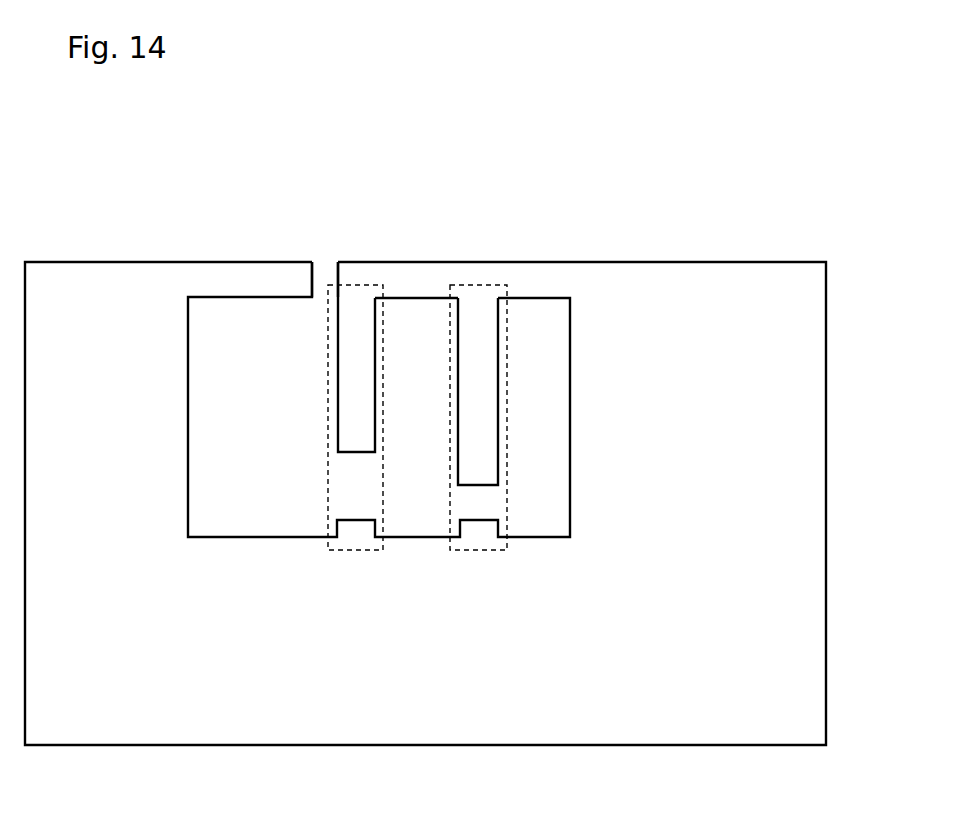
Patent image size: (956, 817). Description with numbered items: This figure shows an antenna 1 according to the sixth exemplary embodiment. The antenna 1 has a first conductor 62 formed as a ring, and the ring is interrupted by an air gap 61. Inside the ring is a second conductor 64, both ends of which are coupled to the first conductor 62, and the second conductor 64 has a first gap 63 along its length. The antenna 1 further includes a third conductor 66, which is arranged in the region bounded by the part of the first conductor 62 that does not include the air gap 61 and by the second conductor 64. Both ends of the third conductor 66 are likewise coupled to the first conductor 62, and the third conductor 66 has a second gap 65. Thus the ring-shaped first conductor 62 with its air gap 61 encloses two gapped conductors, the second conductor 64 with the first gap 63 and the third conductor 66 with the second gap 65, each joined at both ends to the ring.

The antenna 1 is at (697, 262).
The air gap 61 is at (324, 262).
The first conductor 62 is at (783, 534).
The first gap 63 is at (357, 477).
The second conductor 64 is at (328, 406).
The second gap 65 is at (480, 503).
The third conductor 66 is at (509, 394).